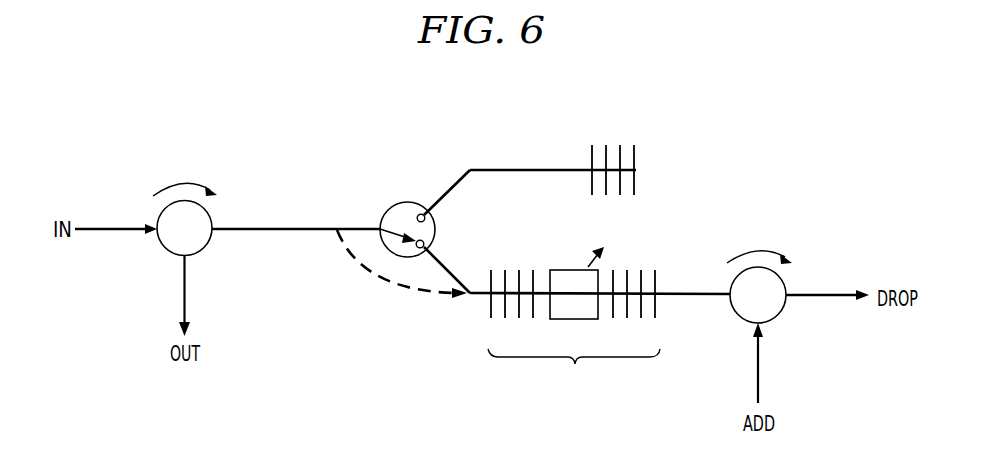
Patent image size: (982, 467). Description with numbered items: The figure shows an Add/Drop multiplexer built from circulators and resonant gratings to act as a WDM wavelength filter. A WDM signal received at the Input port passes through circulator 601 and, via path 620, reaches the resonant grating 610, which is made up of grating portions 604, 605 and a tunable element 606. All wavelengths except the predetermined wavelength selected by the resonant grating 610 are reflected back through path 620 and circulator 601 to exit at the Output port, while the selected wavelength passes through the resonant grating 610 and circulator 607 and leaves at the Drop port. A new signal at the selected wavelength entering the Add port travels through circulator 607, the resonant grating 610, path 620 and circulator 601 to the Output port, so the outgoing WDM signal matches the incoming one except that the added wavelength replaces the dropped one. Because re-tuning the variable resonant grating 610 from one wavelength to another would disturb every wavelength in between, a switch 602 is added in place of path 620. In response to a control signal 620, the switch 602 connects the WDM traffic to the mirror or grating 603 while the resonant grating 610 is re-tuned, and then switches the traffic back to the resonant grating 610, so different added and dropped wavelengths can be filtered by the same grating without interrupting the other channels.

The circulator 601 is at (167, 252).
The switch 602 is at (388, 209).
The mirror or grating 603 is at (553, 154).
The fiber Bragg grating 604 is at (512, 276).
The fiber Bragg grating 605 is at (634, 276).
The tunable element 606 is at (559, 320).
The circulator 607 is at (784, 312).
The resonant grating 610 is at (574, 371).
The path 620 is at (384, 281).